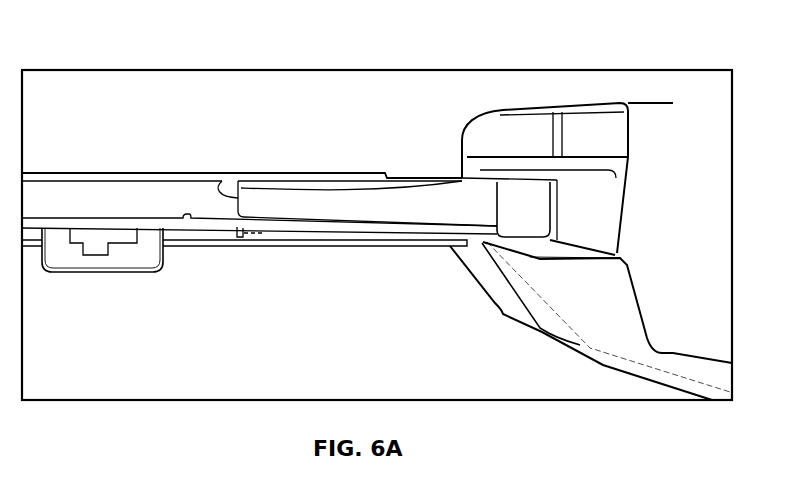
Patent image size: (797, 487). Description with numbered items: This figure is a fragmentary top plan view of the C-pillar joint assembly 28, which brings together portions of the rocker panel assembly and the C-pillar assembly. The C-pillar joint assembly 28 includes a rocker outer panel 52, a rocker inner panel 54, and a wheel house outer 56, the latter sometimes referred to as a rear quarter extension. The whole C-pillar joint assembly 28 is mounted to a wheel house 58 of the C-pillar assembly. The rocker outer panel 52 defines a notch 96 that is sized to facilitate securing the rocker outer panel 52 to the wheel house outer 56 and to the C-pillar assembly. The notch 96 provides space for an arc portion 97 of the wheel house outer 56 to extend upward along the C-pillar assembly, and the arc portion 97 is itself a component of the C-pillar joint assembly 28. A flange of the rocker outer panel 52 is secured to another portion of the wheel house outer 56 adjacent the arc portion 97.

The C-pillar joint assembly 28 is at (424, 89).
The rocker outer panel 52 is at (103, 178).
The rocker inner panel 54 is at (175, 248).
The wheel house outer 56 is at (326, 250).
The wheel house 58 is at (558, 105).
The notch 96 is at (226, 174).
The arc portion 97 is at (310, 172).